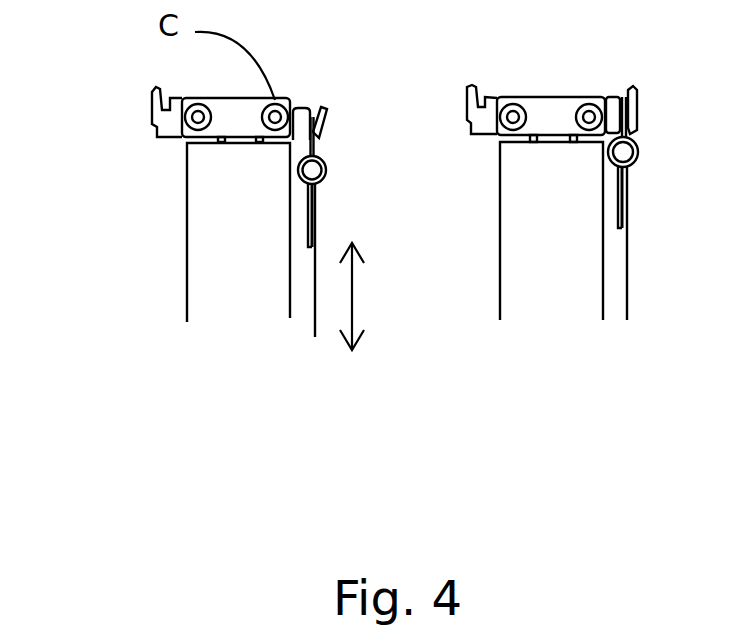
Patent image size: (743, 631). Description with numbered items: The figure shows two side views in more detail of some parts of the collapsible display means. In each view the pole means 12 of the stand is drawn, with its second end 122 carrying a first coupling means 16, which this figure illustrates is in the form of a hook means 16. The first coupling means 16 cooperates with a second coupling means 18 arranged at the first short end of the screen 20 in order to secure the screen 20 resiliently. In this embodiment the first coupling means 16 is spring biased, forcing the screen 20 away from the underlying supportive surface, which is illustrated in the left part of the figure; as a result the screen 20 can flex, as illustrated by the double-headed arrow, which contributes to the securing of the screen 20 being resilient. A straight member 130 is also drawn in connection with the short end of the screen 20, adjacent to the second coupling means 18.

The pole means 12 is at (183, 293).
The first coupling means 16 is at (153, 90).
The second coupling means 18 is at (312, 150).
The screen 20 is at (317, 338).
The second end 122 is at (185, 150).
The straight member 130 is at (326, 177).